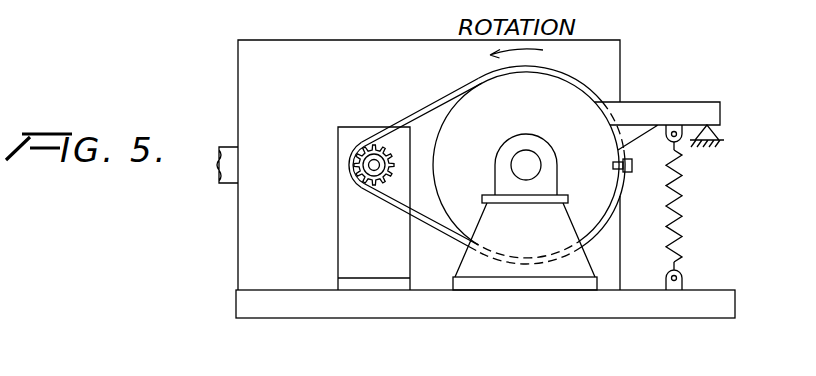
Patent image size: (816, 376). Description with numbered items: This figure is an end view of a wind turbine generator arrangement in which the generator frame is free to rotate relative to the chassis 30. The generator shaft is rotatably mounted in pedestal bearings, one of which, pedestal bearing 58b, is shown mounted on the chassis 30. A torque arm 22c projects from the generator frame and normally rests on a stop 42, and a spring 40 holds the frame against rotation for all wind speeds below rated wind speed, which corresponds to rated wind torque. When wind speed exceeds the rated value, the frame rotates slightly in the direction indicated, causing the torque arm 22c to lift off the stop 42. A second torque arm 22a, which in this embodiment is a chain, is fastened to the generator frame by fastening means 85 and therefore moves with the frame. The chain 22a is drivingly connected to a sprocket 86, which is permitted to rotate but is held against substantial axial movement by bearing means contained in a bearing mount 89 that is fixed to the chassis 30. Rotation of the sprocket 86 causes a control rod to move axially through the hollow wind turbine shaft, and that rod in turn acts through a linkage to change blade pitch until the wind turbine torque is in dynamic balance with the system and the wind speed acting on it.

The torque arm 22a is at (440, 98).
The torque arm 22c is at (686, 102).
The chassis 30 is at (408, 306).
The spring 40 is at (682, 228).
The stop 42 is at (722, 135).
The pedestal bearing 58b is at (532, 183).
The fastening means 85 is at (634, 176).
The sprocket 86 is at (394, 190).
The bearing mount 89 is at (350, 262).